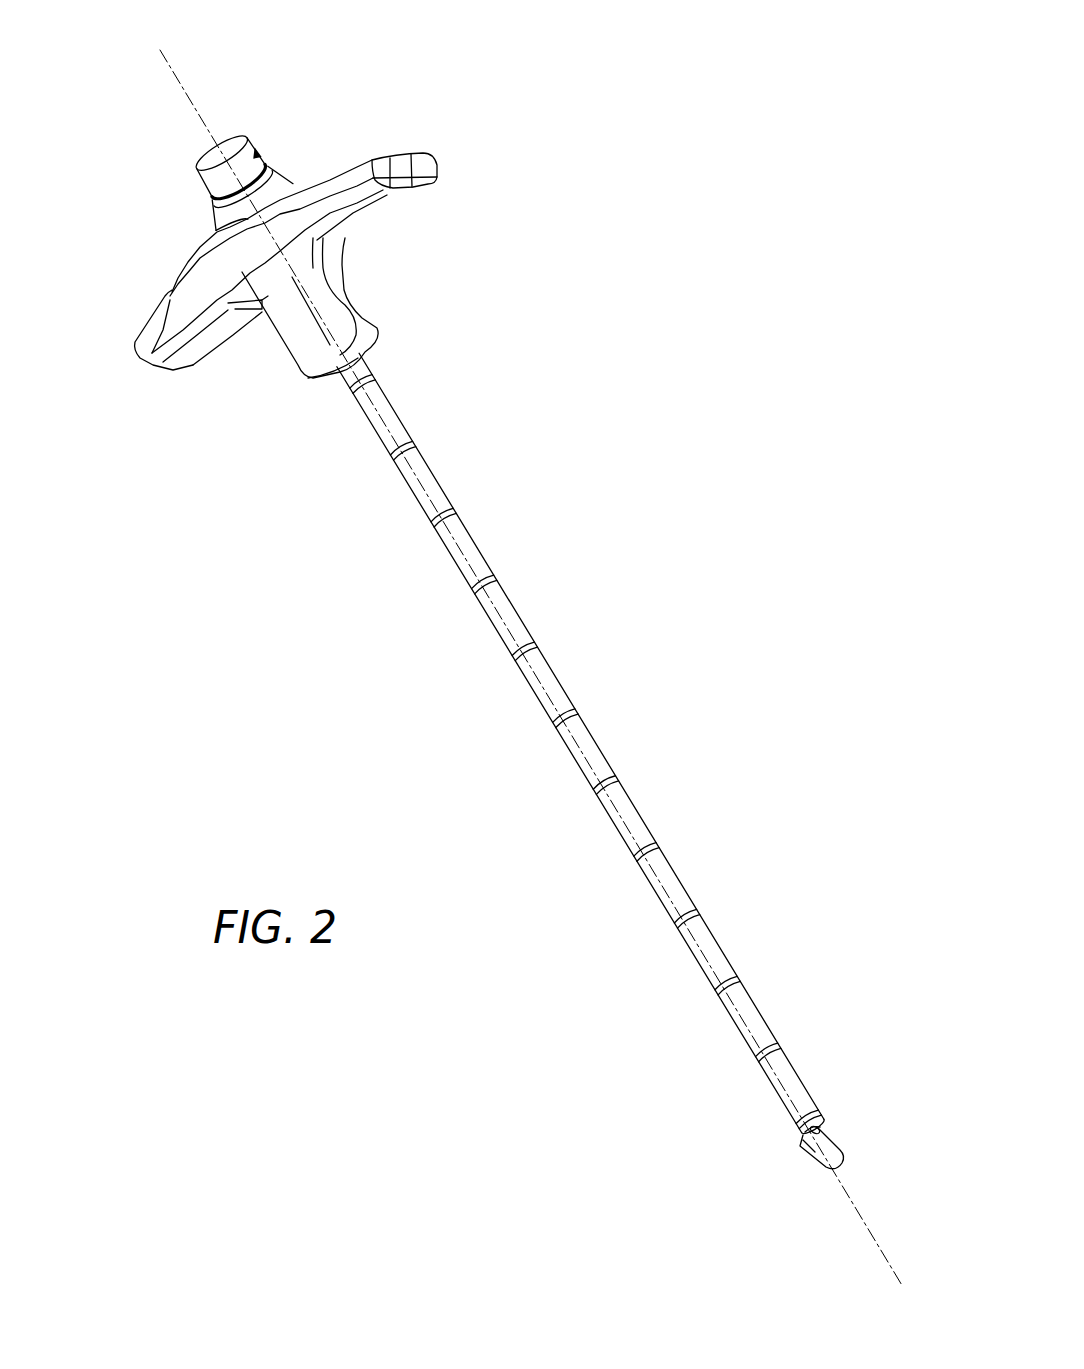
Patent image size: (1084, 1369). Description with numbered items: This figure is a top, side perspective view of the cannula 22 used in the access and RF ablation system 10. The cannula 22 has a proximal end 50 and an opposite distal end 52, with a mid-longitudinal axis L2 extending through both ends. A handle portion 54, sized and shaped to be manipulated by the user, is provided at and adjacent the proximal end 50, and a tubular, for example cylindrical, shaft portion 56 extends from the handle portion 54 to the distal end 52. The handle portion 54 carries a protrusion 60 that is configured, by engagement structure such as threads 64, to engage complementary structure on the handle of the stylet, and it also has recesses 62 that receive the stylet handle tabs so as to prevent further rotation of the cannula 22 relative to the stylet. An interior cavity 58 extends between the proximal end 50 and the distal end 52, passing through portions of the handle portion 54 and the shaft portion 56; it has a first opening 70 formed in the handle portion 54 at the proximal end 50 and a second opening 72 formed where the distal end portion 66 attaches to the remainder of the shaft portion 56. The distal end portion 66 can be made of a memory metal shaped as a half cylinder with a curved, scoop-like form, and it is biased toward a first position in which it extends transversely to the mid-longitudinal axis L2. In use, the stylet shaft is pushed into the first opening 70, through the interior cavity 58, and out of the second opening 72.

The access and RF ablation system 10 is at (146, 139).
The cannula 22 is at (523, 625).
The proximal end 50 is at (244, 102).
The first opening 70 is at (232, 140).
The distal end 52 is at (833, 1163).
The handle portion 54 is at (345, 163).
The shaft portion 56 is at (717, 948).
The interior cavity 58 is at (813, 1132).
The protrusion 60 is at (245, 157).
The recesses 62 is at (157, 320).
The threads 64 is at (210, 197).
The distal end portion 66 is at (812, 1152).
The second opening 72 is at (817, 1128).
The mid-longitudinal axis L2 is at (890, 1267).